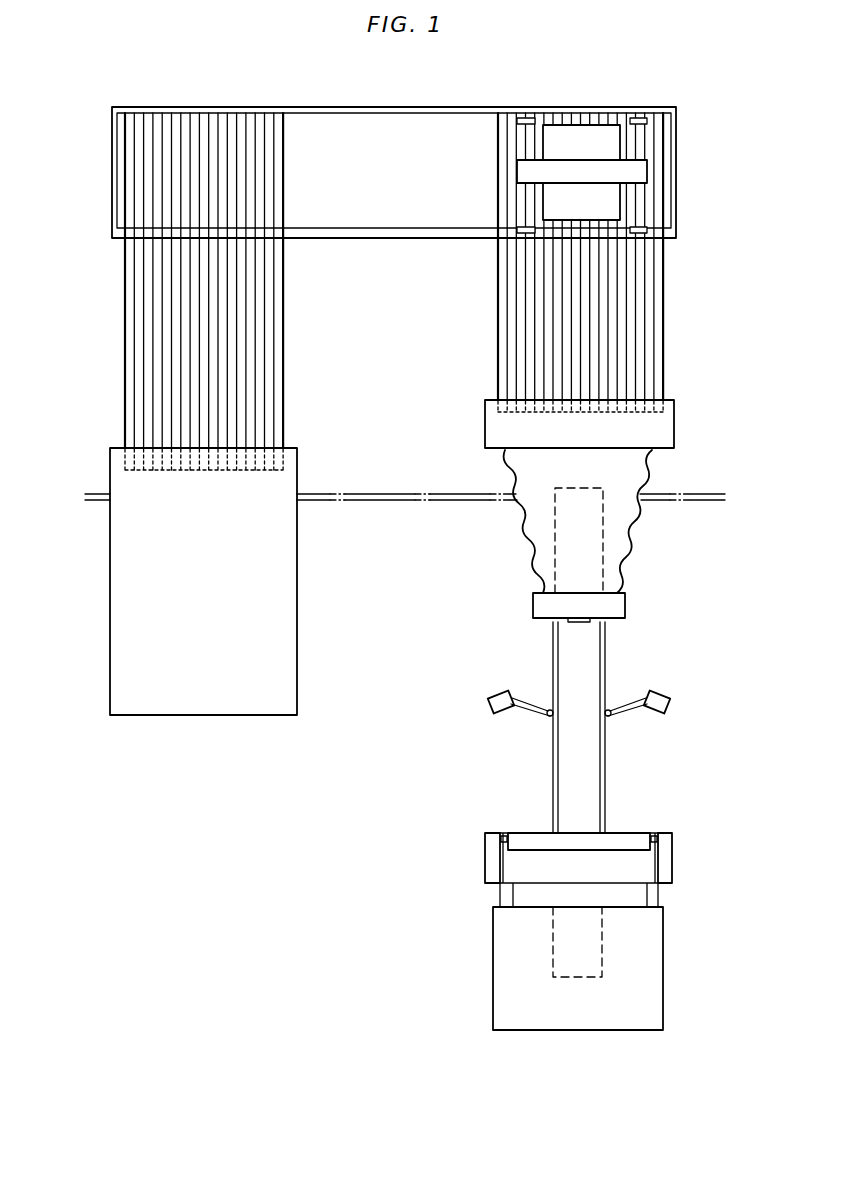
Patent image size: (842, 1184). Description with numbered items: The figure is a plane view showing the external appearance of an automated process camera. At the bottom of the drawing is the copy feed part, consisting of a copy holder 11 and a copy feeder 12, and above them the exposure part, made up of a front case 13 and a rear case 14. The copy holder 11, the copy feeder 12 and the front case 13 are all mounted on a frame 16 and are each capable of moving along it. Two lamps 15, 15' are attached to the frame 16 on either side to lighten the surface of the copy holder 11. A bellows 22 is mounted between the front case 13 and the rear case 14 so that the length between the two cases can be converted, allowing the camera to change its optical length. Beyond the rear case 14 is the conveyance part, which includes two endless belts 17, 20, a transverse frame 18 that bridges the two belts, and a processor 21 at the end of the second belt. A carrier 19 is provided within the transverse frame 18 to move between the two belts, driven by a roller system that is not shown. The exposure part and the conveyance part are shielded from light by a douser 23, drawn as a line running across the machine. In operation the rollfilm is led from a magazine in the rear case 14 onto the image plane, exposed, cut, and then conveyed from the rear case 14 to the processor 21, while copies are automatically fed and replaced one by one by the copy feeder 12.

The copy holder 11 is at (668, 852).
The copy feeder 12 is at (655, 960).
The front case 13 is at (618, 605).
The rear case 14 is at (665, 432).
The lamp 15 is at (505, 725).
The lamp 15' is at (661, 703).
The frame 16 is at (593, 682).
The endless belt 17 is at (648, 296).
The transverse frame 18 is at (407, 239).
The carrier 19 is at (598, 133).
The endless belt 20 is at (127, 293).
The processor 21 is at (120, 597).
The bellows 22 is at (638, 508).
The douser 23 is at (372, 502).